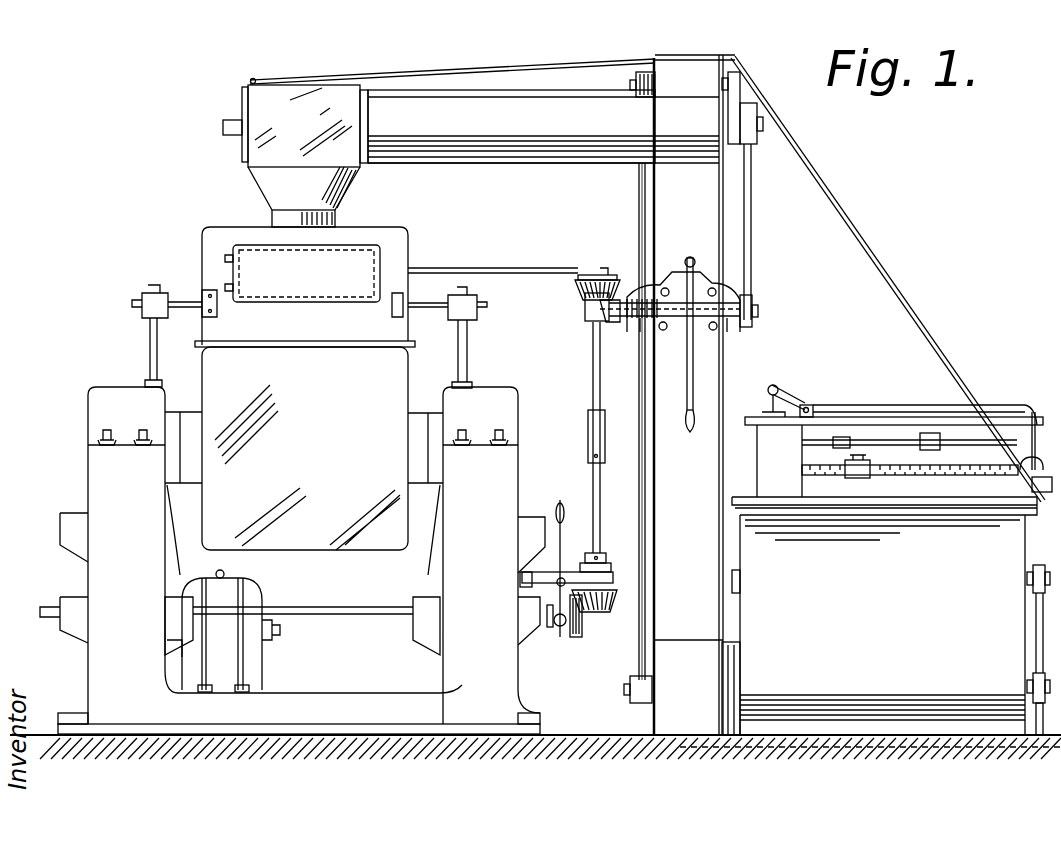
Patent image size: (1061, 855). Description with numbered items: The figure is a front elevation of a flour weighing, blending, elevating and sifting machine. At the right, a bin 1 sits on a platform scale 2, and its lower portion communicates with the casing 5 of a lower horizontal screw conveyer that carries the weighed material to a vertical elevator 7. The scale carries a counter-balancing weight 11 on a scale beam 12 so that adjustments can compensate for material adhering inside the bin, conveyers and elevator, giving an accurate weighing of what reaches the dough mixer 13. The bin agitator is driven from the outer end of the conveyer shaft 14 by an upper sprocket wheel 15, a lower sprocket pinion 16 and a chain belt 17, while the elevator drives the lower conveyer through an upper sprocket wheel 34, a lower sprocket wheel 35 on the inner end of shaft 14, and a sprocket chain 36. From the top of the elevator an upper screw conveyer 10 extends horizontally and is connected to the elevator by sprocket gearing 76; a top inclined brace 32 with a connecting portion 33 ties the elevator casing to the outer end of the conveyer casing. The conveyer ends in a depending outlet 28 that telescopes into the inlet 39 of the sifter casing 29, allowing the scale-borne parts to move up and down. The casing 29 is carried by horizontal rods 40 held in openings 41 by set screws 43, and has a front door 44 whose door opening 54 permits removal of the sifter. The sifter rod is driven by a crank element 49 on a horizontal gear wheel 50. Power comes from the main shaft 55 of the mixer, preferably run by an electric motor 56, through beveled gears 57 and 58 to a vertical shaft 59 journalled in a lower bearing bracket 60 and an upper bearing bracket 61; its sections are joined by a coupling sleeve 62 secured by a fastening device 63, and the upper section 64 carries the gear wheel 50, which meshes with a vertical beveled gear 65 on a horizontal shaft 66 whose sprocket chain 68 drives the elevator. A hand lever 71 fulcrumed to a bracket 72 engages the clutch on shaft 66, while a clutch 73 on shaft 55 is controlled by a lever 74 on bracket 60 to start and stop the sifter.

The bin 1 is at (882, 552).
The platform scale 2 is at (820, 742).
The casing of the lower horizontal screw conveyer 5 is at (997, 723).
The vertical elevator 7 is at (662, 238).
The upper screw conveyer 10 is at (522, 125).
The counter-balancing weight 11 is at (840, 437).
The scale beam 12 is at (947, 463).
The dough mixer 13 is at (305, 445).
The shaft of the screw conveyer 14 is at (1058, 681).
The upper sprocket wheel 15 is at (1040, 570).
The lower sprocket pinion 16 is at (1053, 703).
The chain belt 17 is at (1040, 615).
The depending outlet 28 is at (278, 184).
The casing of the vibratory sifter 29 is at (400, 246).
The top inclined brace 32 is at (488, 56).
The connecting portion 33 is at (690, 43).
The upper sprocket wheel 34 is at (631, 83).
The lower sprocket wheel 35 is at (630, 696).
The sprocket chain 36 is at (636, 656).
The inlet 39 is at (338, 227).
The horizontal rods 40 is at (180, 297).
The openings 41 is at (140, 298).
The set screws 43 is at (478, 268).
The door 44 is at (306, 286).
The crank element 49 is at (607, 268).
The horizontal gear wheel 50 is at (587, 273).
The door opening 54 is at (350, 248).
The main shaft 55 is at (370, 613).
The electric motor 56 is at (220, 655).
The beveled gear 57 is at (582, 630).
The beveled gear 58 is at (608, 612).
The vertical shaft 59 is at (598, 488).
The lower bearing bracket 60 is at (607, 567).
The upper bearing bracket 61 is at (587, 306).
The coupling sleeve 62 is at (588, 426).
The fastening device 63 is at (592, 458).
The upper section of the vertical shaft 64 is at (592, 381).
The vertical beveled gear 65 is at (600, 328).
The horizontal shaft 66 is at (667, 305).
The sprocket chain 68 is at (747, 231).
The hand lever 71 is at (692, 374).
The bracket 72 is at (700, 274).
The clutch 73 is at (553, 628).
The lever 74 is at (559, 520).
The sprocket gearing 76 is at (745, 90).